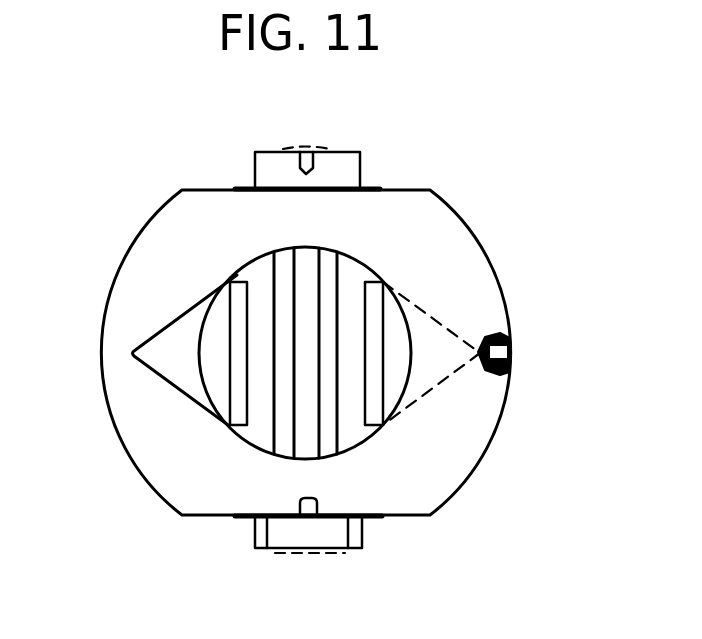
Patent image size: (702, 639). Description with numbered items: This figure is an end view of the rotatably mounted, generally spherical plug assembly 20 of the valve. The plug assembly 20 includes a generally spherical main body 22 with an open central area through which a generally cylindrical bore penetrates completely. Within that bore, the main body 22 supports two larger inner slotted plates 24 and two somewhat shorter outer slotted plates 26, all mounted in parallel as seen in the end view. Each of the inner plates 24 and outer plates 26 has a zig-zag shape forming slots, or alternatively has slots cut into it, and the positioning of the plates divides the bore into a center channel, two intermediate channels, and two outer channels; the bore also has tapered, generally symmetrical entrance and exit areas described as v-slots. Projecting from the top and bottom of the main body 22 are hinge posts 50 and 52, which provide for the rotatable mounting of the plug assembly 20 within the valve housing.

The spherical plug assembly 20 is at (128, 165).
The main body 22 is at (480, 292).
The inner slotted plates 24 is at (237, 277).
The outer slotted plates 26 is at (287, 250).
The hinge post 50 is at (253, 546).
The hinge post 52 is at (360, 152).